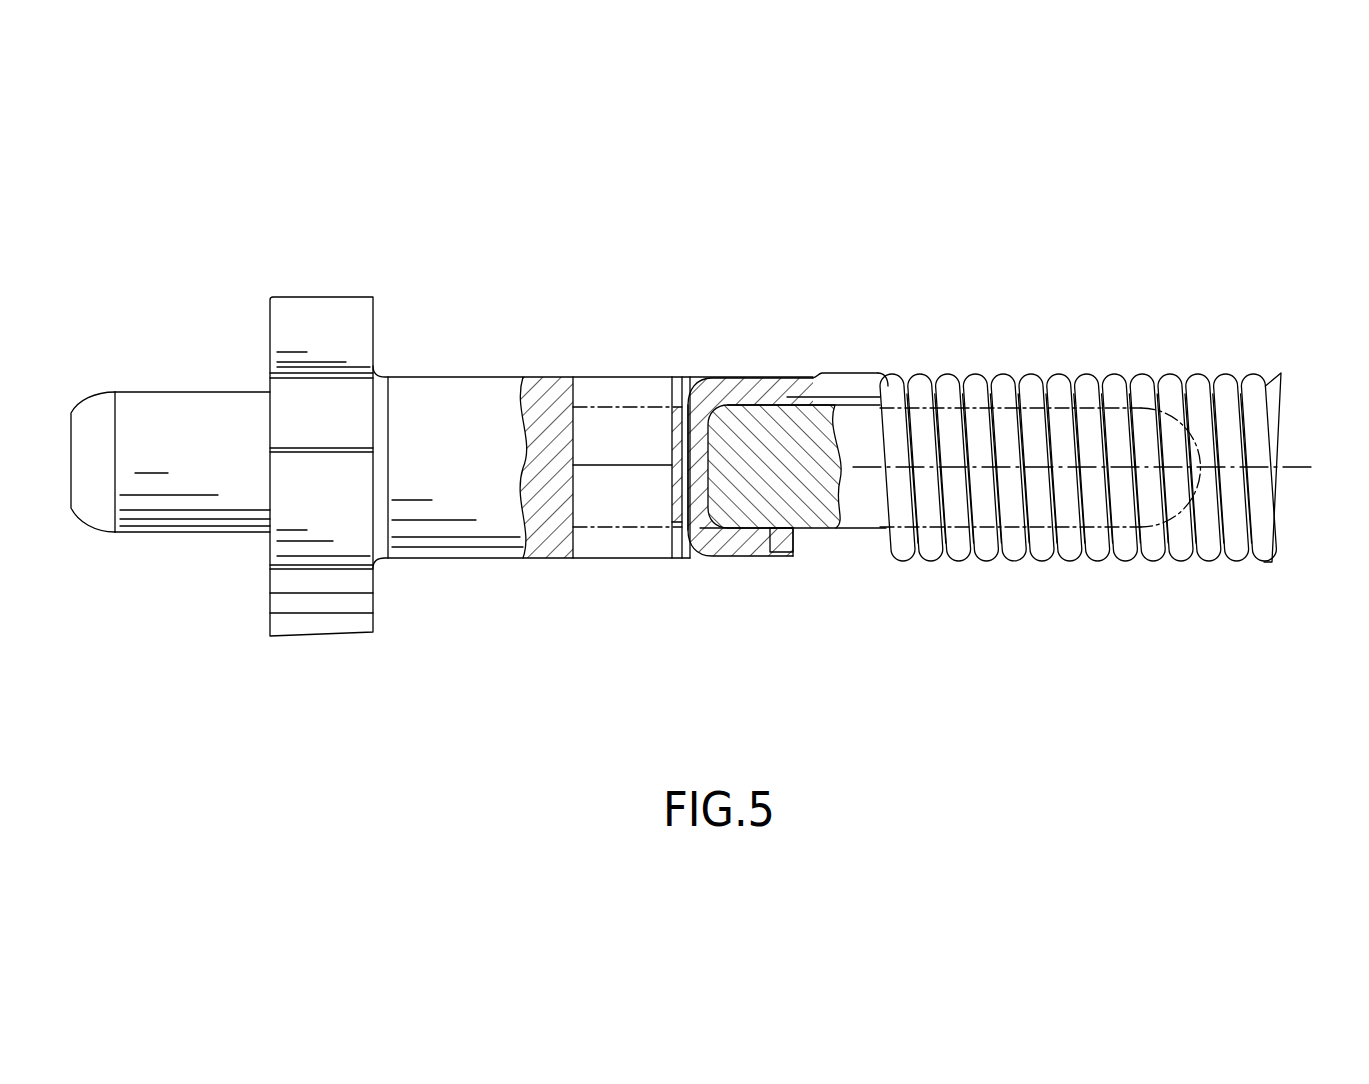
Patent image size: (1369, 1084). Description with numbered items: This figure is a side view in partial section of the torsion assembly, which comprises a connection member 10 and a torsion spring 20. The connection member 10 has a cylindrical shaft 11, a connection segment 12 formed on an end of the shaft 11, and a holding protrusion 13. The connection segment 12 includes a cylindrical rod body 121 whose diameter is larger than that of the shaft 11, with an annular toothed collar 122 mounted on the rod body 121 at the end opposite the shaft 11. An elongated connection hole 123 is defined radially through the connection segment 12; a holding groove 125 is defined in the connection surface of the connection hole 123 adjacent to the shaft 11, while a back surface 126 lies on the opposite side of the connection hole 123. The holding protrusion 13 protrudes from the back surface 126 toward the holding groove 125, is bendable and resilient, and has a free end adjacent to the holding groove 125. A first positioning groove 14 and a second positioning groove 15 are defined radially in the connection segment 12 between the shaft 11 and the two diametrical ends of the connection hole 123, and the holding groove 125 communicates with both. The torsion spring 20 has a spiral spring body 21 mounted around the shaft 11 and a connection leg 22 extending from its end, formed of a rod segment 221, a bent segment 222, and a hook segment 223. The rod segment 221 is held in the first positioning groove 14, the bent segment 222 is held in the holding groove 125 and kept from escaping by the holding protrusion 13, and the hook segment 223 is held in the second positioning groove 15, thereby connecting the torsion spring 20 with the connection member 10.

The connection member 10 is at (222, 433).
The shaft 11 is at (858, 512).
The connection segment 12 is at (593, 462).
The rod body 121 is at (458, 546).
The annular toothed collar 122 is at (317, 320).
The connection hole 123 is at (597, 392).
The holding groove 125 is at (706, 463).
The back surface 126 is at (577, 492).
The holding protrusion 13 is at (678, 415).
The first positioning groove 14 is at (798, 403).
The second positioning groove 15 is at (766, 532).
The torsion spring 20 is at (1079, 464).
The spring body 21 is at (1088, 572).
The connection leg 22 is at (809, 469).
The rod segment 221 is at (851, 380).
The bent segment 222 is at (700, 478).
The hook segment 223 is at (742, 545).